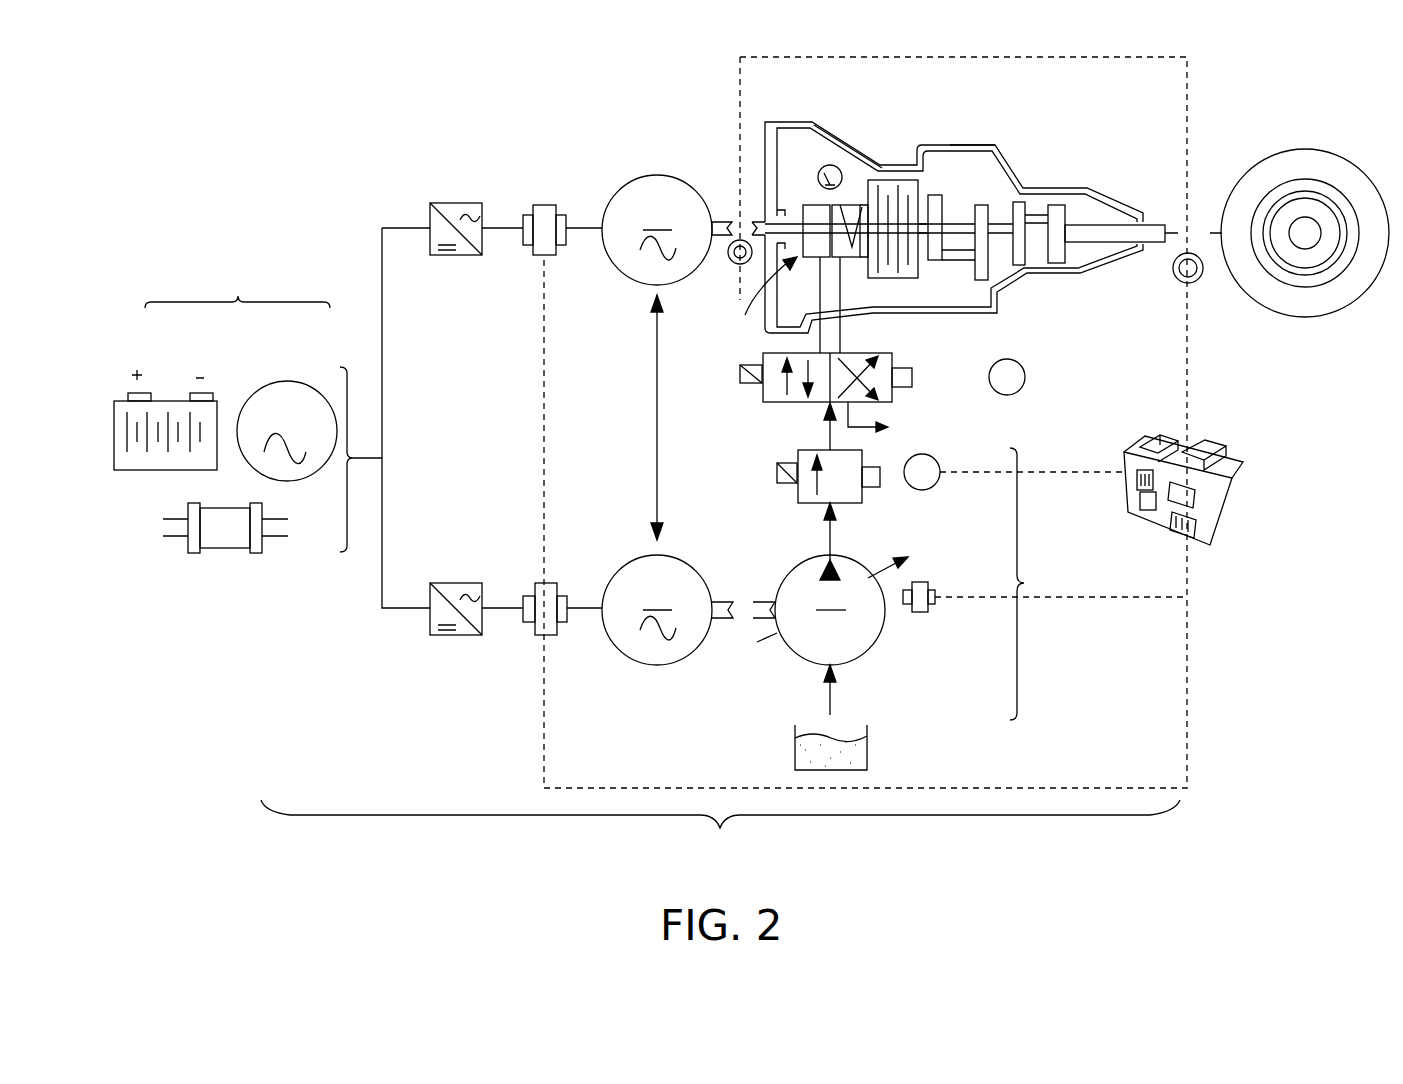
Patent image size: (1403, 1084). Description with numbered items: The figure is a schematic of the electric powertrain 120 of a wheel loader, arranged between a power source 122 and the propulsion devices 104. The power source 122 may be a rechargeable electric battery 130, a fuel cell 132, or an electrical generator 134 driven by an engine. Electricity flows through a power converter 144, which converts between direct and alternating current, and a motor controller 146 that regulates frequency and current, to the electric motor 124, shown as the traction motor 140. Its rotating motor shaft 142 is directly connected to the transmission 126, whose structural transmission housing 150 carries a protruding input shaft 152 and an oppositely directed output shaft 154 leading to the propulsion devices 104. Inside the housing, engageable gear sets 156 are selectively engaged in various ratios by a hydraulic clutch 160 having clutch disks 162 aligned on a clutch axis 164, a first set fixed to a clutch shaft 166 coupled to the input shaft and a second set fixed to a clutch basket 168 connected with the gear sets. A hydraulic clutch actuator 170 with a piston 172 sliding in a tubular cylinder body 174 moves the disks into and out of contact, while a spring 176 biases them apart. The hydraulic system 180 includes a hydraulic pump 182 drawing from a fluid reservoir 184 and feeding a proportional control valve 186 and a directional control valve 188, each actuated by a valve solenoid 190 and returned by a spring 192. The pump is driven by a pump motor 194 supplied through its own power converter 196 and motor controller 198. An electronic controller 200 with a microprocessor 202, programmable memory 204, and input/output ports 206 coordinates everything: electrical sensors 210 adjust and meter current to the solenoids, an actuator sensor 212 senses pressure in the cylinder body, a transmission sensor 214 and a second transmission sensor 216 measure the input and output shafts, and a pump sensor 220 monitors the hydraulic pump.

The propulsion devices 104 is at (1335, 318).
The electric powertrain 120 is at (724, 465).
The power source 122 is at (249, 402).
The electric motor 124 is at (655, 422).
The transmission 126 is at (975, 145).
The rechargeable electric battery 130 is at (172, 408).
The fuel cell 132 is at (222, 553).
The electrical generator 134 is at (284, 382).
The traction motor 140 is at (650, 190).
The motor shaft 142 is at (722, 218).
The power converter 144 is at (452, 205).
The motor controller 146 is at (546, 205).
The structural transmission housing 150 is at (768, 127).
The input shaft 152 is at (752, 222).
The output shaft 154 is at (1148, 225).
The engageable gear sets 156 is at (983, 204).
The hydraulic clutch 160 is at (898, 280).
The clutch disks 162 is at (912, 190).
The clutch axis 164 is at (935, 262).
The clutch shaft 166 is at (870, 180).
The clutch basket 168 is at (898, 178).
The hydraulic clutch actuator 170 is at (762, 301).
The piston 172 is at (815, 205).
The tubular cylinder body 174 is at (803, 258).
The spring 176 is at (843, 205).
The hydraulic system 180 is at (1037, 584).
The hydraulic pump 182 is at (875, 648).
The fluid reservoir 184 is at (868, 752).
The proportional control valve 186 is at (797, 503).
The directional control valve 188 is at (797, 401).
The valve solenoid 190 is at (912, 378).
The spring 192 is at (740, 372).
The pump motor 194 is at (622, 640).
The power converter 196 is at (435, 635).
The motor controller 198 is at (538, 635).
The electronic controller 200 is at (1200, 504).
The microprocessor 202 is at (1142, 512).
The programmable memory 204 is at (1215, 518).
The input/output ports 206 is at (1190, 535).
The electrical sensors 210 is at (1028, 383).
The actuator sensor 212 is at (828, 163).
The transmission sensor 214 is at (731, 262).
The second transmission sensor 216 is at (1200, 280).
The pump sensor 220 is at (935, 608).